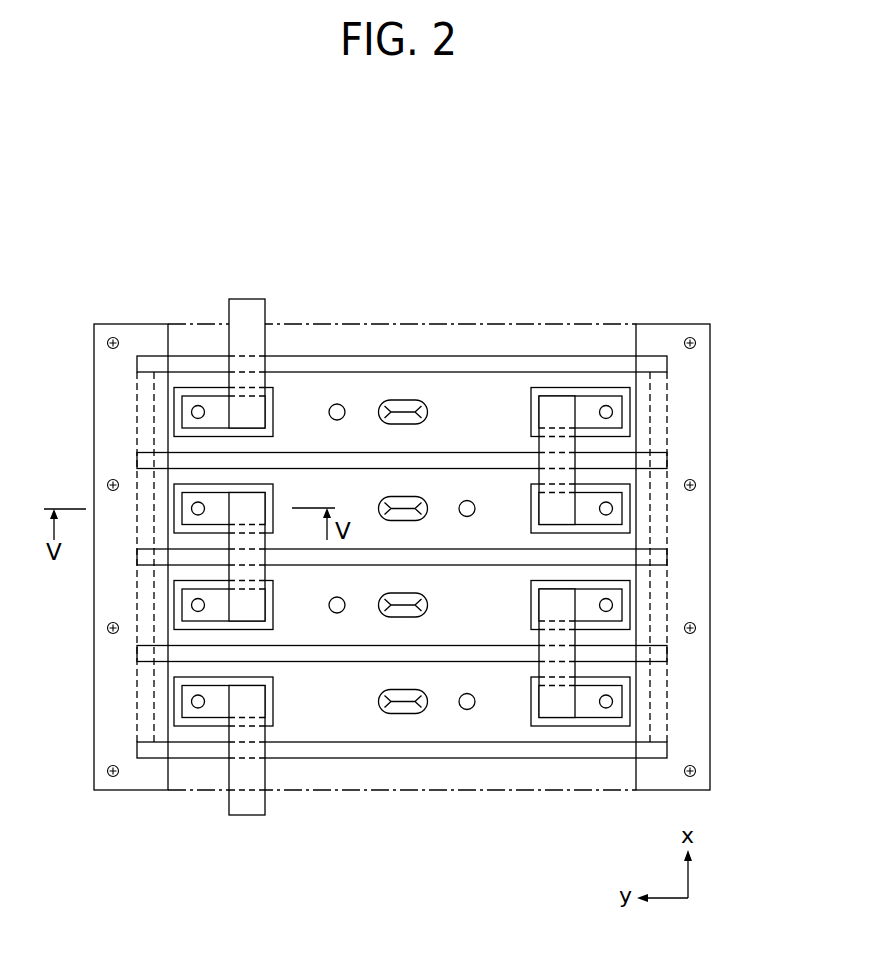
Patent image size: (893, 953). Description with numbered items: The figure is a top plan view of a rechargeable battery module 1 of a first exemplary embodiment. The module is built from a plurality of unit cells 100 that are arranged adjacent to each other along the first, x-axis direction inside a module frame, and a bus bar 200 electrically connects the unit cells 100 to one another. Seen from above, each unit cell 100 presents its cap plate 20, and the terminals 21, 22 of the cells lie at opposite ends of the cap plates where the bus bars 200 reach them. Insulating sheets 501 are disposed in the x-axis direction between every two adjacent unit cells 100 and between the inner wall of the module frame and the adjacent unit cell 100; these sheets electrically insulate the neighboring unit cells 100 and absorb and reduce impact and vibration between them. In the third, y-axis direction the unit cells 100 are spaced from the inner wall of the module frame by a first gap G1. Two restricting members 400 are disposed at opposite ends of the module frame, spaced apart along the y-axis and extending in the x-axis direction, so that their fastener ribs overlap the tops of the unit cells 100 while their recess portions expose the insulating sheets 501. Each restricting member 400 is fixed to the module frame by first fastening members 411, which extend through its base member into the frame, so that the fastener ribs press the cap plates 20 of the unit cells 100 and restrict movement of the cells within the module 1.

The rechargeable battery module 1 is at (379, 238).
The cap plate 20 is at (332, 720).
The first terminal 21 is at (168, 603).
The second terminal 22 is at (168, 700).
The unit cell 100 is at (511, 752).
The bus bar 200 is at (247, 299).
The restricting member 400 is at (137, 323).
The first fastening member 411 is at (108, 342).
The insulating sheet 501 is at (462, 653).
The first gap G1 is at (161, 670).